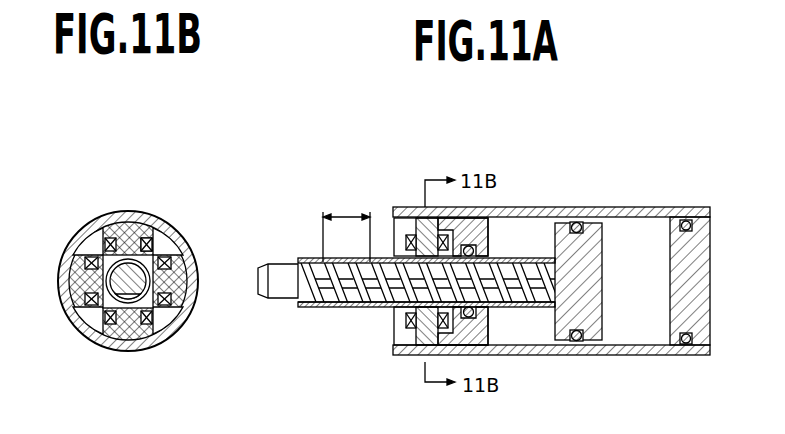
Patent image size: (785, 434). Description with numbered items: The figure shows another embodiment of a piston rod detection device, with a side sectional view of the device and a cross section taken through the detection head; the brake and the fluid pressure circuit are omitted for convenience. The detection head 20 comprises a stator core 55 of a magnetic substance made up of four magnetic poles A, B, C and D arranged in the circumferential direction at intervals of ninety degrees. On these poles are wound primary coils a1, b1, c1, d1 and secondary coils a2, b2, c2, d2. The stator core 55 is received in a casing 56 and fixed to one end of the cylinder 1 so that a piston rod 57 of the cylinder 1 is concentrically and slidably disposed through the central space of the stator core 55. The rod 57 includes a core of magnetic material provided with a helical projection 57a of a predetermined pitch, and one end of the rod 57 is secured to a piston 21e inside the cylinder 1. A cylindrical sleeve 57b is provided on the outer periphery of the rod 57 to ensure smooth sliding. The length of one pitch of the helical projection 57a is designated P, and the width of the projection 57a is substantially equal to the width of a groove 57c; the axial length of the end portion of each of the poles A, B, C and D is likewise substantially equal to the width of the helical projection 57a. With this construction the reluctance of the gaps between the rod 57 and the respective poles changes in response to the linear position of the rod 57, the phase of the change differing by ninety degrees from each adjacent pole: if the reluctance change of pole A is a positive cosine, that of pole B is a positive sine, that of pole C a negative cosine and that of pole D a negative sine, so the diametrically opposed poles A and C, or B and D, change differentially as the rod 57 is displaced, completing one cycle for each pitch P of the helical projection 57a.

In FIG. 11A, the cylinder 1 is at (590, 207).
In FIG. 11B, the detection head 20 is at (190, 220).
In FIG. 11A, the detection head 20 is at (402, 196).
In FIG. 11A, the piston 21e is at (597, 357).
In FIG. 11B, the stator core 55 is at (153, 244).
In FIG. 11A, the stator core 55 is at (410, 230).
In FIG. 11B, the casing 56 is at (157, 212).
In FIG. 11A, the casing 56 is at (418, 217).
In FIG. 11B, the piston rod 57 is at (126, 302).
In FIG. 11A, the piston rod 57 is at (314, 252).
In FIG. 11A, the helical projection 57a is at (354, 290).
In FIG. 11A, the cylindrical sleeve 57b is at (306, 307).
In FIG. 11A, the groove 57c is at (380, 308).
In FIG. 11A, the pitch length of helical projection P is at (346, 226).
In FIG. 11B, the magnetic pole A is at (122, 198).
In FIG. 11B, the magnetic pole B is at (220, 281).
In FIG. 11B, the magnetic pole C is at (125, 378).
In FIG. 11B, the magnetic pole D is at (41, 281).
In FIG. 11B, the primary coil a1 is at (153, 246).
In FIG. 11B, the secondary coil a2 is at (104, 237).
In FIG. 11B, the primary coil b1 is at (172, 261).
In FIG. 11B, the secondary coil b2 is at (181, 322).
In FIG. 11B, the primary coil c1 is at (166, 327).
In FIG. 11B, the secondary coil c2 is at (92, 340).
In FIG. 11B, the primary coil d1 is at (84, 316).
In FIG. 11B, the secondary coil d2 is at (90, 256).